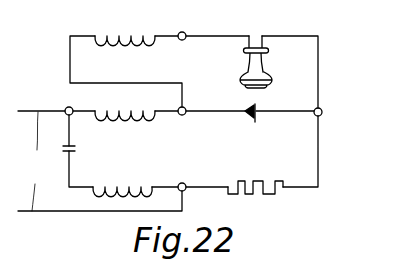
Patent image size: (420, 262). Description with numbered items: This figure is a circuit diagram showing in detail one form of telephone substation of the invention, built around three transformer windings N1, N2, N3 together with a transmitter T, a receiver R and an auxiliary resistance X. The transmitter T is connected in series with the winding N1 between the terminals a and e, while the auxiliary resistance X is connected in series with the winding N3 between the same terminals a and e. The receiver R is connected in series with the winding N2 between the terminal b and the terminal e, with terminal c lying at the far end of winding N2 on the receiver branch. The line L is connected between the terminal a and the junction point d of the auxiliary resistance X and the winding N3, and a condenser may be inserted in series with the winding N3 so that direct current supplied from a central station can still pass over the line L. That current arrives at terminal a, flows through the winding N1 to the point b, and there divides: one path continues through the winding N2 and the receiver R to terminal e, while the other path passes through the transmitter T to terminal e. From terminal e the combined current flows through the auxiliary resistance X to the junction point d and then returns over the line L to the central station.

The winding N2 is at (125, 28).
The winding N1 is at (125, 126).
The winding N3 is at (122, 177).
The terminal a is at (63, 103).
The terminal b is at (187, 103).
The terminal c is at (182, 26).
The junction point d is at (183, 179).
The terminal e is at (325, 113).
The receiver R is at (262, 62).
The transmitter T is at (259, 120).
The auxiliary resistance X is at (255, 178).
The line L is at (32, 161).